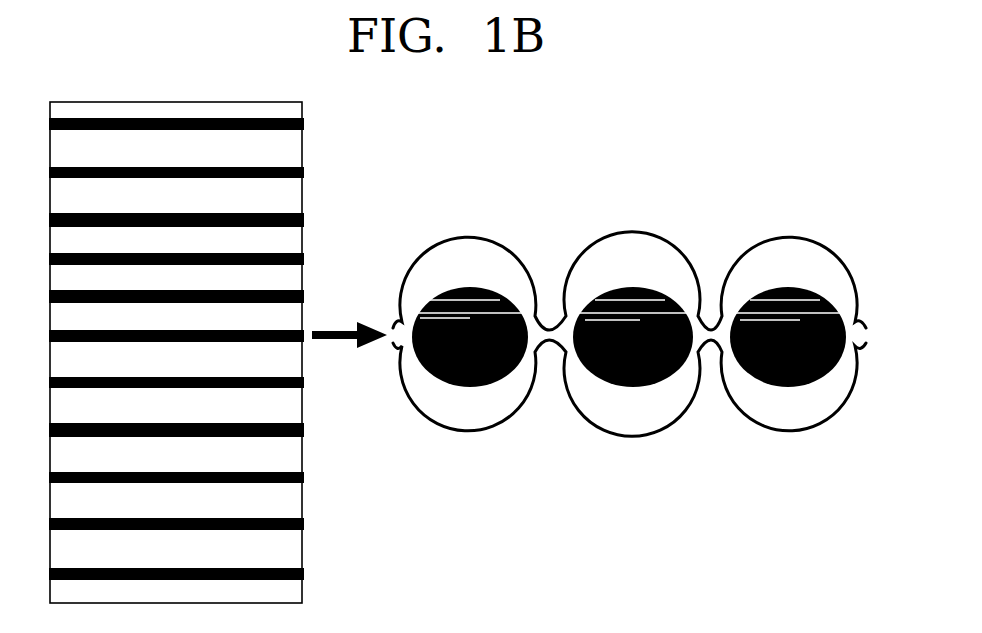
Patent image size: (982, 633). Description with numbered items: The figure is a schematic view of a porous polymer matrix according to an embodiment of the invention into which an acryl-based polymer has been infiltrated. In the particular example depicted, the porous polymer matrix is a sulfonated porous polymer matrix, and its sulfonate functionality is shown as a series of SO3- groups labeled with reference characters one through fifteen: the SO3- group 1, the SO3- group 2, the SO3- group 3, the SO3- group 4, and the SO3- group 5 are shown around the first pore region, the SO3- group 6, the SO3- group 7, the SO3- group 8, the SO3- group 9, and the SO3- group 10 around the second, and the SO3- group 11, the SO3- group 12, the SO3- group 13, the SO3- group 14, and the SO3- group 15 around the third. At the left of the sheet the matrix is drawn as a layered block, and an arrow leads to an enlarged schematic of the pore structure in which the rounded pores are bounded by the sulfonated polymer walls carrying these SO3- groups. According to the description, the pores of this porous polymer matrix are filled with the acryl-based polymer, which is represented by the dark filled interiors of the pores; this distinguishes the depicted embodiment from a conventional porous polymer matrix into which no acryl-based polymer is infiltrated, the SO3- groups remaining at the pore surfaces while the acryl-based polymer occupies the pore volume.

The SO3- group 1 is at (398, 322).
The SO3- group 2 is at (426, 290).
The SO3- group 3 is at (465, 270).
The SO3- group 4 is at (497, 288).
The SO3- group 5 is at (528, 320).
The SO3- group 6 is at (568, 312).
The SO3- group 7 is at (585, 290).
The SO3- group 8 is at (632, 275).
The SO3- group 9 is at (680, 295).
The SO3- group 10 is at (700, 332).
The SO3- group 11 is at (726, 322).
The SO3- group 12 is at (750, 292).
The SO3- group 13 is at (787, 277).
The SO3- group 14 is at (836, 292).
The SO3- group 15 is at (857, 330).